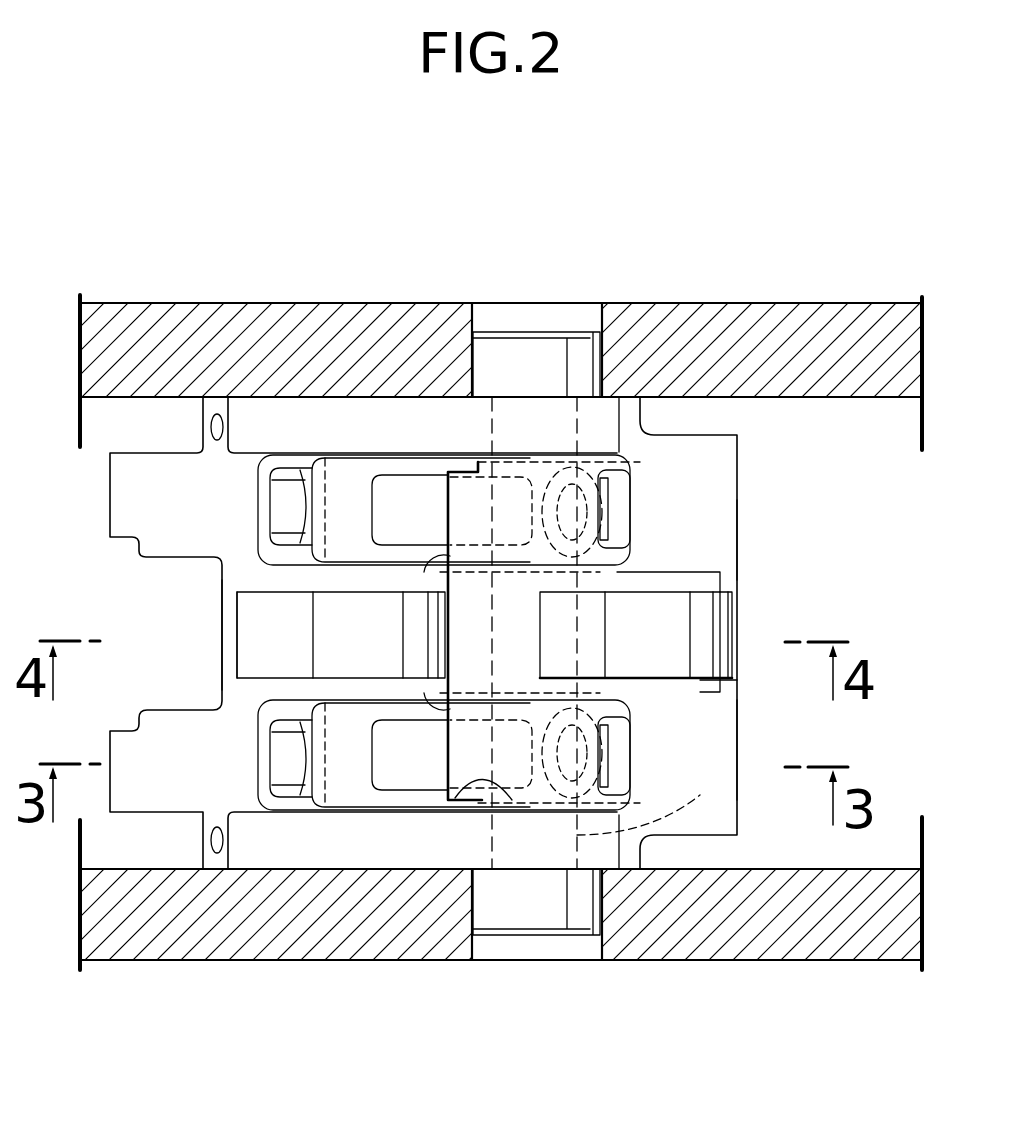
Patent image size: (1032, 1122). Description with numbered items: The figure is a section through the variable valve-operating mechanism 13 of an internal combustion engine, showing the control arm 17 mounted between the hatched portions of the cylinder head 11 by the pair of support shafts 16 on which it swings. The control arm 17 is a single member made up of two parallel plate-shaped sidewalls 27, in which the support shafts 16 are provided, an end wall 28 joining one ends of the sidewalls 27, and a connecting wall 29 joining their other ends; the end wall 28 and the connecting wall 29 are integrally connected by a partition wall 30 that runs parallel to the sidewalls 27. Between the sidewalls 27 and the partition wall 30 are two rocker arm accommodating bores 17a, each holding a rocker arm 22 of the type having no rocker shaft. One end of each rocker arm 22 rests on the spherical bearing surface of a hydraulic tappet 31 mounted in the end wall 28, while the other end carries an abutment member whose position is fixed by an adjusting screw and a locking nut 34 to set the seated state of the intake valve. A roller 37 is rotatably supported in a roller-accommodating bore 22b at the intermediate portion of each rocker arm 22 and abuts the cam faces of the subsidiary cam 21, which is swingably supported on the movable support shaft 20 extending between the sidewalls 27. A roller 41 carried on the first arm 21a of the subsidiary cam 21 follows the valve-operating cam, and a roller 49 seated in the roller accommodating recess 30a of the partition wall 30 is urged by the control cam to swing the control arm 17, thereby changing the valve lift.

The cylinder head 11 is at (725, 300).
The variable valve-operating mechanism 13 is at (788, 539).
The support shaft 16 is at (553, 352).
The control arm 17 is at (750, 520).
The rocker arm accommodating bore 17a is at (450, 556).
The movable support shaft 20 is at (642, 840).
The subsidiary cam 21 is at (652, 563).
The first arm 21a is at (718, 693).
The rocker arm 22 is at (350, 450).
The roller-accommodating bore 22b is at (403, 532).
The sidewall 27 is at (300, 394).
The end wall 28 is at (214, 577).
The connecting wall 29 is at (738, 748).
The partition wall 30 is at (366, 706).
The roller accommodating recess 30a is at (262, 593).
The hydraulic tappet 31 is at (277, 527).
The locking nut 34 is at (600, 462).
The roller 37 is at (423, 497).
The roller 41 is at (712, 633).
The roller 49 is at (327, 625).